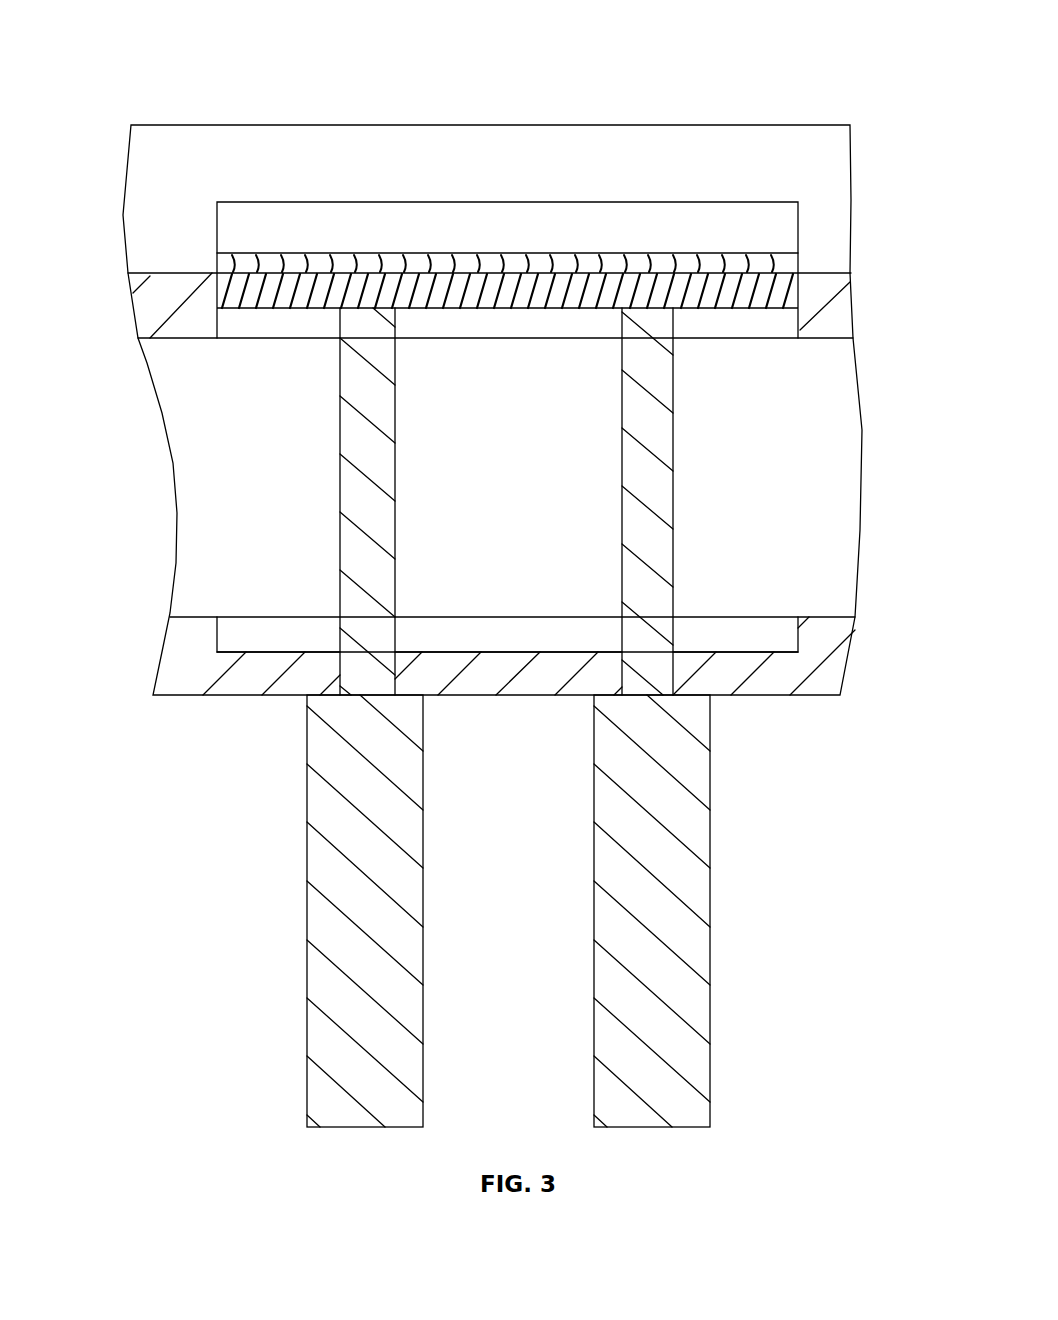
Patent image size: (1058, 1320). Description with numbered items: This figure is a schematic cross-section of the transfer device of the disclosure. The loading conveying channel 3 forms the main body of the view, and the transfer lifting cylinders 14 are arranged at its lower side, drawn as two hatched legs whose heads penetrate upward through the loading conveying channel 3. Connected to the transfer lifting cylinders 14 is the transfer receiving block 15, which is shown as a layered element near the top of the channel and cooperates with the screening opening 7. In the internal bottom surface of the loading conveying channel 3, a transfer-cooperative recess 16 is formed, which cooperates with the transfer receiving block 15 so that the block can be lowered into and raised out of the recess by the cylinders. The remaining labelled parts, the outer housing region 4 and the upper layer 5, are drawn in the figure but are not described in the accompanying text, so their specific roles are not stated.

The loading conveying channel 3 is at (187, 667).
The housing 4 is at (205, 325).
The contact layer 5 is at (592, 268).
The screening opening 7 is at (460, 322).
The transfer lifting cylinders 14 is at (665, 965).
The transfer receiving block 15 is at (770, 292).
The transfer-cooperative recess 16 is at (775, 640).